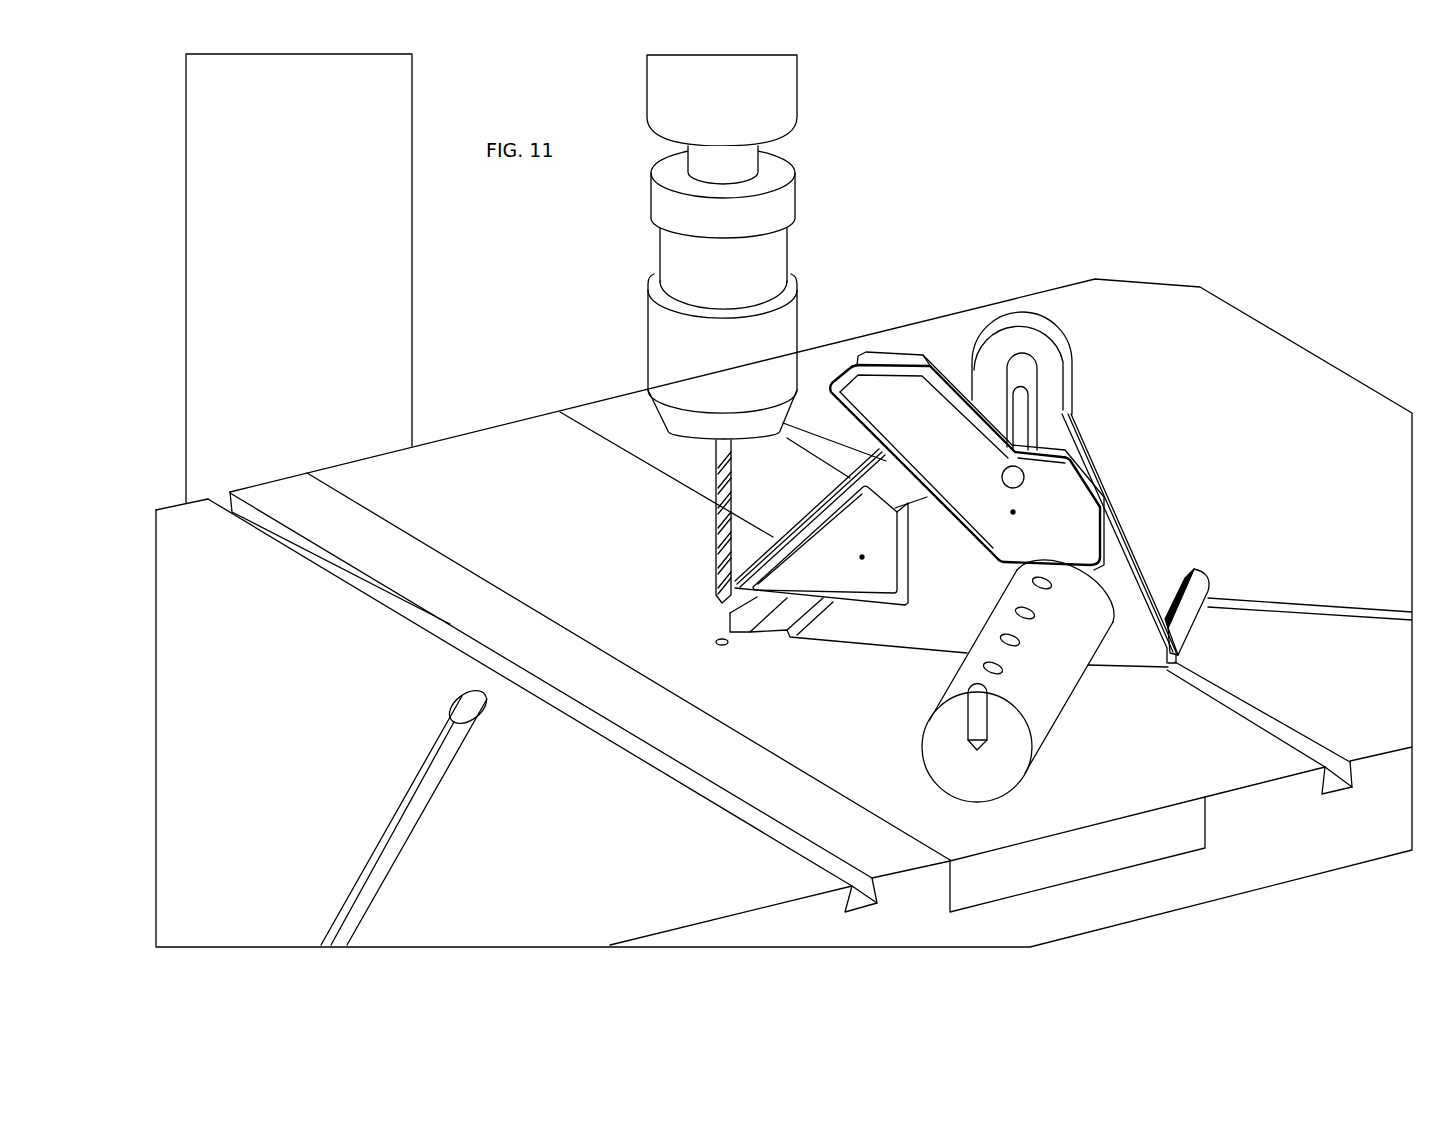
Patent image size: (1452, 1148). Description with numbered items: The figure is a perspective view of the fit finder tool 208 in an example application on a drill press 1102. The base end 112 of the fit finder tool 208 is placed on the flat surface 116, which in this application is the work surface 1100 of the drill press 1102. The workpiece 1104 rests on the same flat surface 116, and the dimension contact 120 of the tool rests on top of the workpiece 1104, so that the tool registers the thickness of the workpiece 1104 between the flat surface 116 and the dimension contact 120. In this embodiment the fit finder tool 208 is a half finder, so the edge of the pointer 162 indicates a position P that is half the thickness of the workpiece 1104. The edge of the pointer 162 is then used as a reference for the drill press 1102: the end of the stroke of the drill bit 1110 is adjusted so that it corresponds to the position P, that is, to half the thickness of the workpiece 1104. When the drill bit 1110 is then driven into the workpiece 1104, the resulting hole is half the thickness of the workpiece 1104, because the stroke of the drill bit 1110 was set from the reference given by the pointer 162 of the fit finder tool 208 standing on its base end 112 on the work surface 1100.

The base end 112 is at (1194, 612).
The flat surface 116 is at (1181, 739).
The dimension contact 120 is at (1043, 568).
The pointer 162 is at (801, 586).
The fit finder tool 208 is at (1030, 350).
The work surface 1100 is at (1090, 784).
The drill press 1102 is at (1090, 811).
The workpiece 1104 is at (1071, 672).
The drill bit 1110 is at (717, 523).
The position P is at (718, 601).